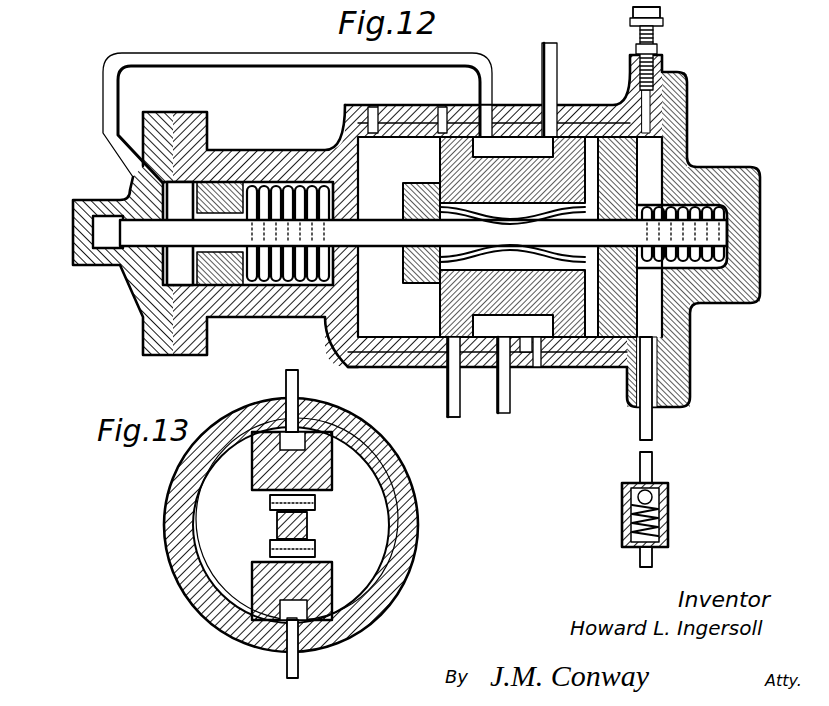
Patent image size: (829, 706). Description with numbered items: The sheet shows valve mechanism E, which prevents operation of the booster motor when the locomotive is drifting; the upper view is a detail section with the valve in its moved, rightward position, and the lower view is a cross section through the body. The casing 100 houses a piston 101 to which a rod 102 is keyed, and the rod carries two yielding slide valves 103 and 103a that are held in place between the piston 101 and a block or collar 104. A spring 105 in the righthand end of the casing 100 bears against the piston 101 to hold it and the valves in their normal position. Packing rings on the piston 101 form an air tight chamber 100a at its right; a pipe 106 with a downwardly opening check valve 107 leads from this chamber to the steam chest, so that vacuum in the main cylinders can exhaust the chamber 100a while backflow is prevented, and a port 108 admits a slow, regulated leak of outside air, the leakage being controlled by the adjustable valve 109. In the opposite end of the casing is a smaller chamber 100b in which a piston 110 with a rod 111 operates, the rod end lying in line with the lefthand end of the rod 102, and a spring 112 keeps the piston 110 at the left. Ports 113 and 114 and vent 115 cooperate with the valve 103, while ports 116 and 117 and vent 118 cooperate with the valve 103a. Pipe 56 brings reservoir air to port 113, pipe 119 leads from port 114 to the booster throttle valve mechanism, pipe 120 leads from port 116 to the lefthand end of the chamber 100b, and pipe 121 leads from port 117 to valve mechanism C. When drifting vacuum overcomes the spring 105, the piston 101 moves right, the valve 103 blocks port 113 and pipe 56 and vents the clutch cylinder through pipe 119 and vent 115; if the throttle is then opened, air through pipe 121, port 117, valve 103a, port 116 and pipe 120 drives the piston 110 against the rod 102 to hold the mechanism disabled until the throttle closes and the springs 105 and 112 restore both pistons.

In FIG. 12, the pipe 56 is at (451, 420).
In FIG. 13, the casing 100 is at (168, 500).
In FIG. 12, the air tight chamber 100a is at (652, 167).
In FIG. 12, the smaller chamber 100b is at (287, 195).
In FIG. 12, the piston 101 is at (632, 313).
In FIG. 12, the rod 102 is at (512, 237).
In FIG. 13, the rod 102 is at (310, 522).
In FIG. 12, the yielding slide valve 103 is at (513, 326).
In FIG. 13, the yielding slide valve 103 is at (283, 608).
In FIG. 12, the yielding slide valve 103a is at (513, 147).
In FIG. 13, the yielding slide valve 103a is at (297, 440).
In FIG. 12, the block or collar 104 is at (410, 190).
In FIG. 12, the spring 105 is at (720, 215).
In FIG. 12, the pipe 106 is at (653, 440).
In FIG. 12, the check valve 107 is at (668, 512).
In FIG. 12, the port 108 is at (652, 115).
In FIG. 12, the adjustable valve 109 is at (655, 40).
In FIG. 12, the piston 110 is at (217, 185).
In FIG. 12, the rod 111 is at (130, 240).
In FIG. 12, the spring 112 is at (285, 260).
In FIG. 12, the port 113 is at (423, 368).
In FIG. 12, the port 114 is at (525, 357).
In FIG. 13, the port 114 is at (300, 624).
In FIG. 12, the vent 115 is at (545, 360).
In FIG. 12, the port 116 is at (486, 120).
In FIG. 13, the port 116 is at (288, 418).
In FIG. 12, the port 117 is at (570, 108).
In FIG. 12, the vent 118 is at (441, 112).
In FIG. 12, the pipe 119 is at (505, 414).
In FIG. 13, the pipe 119 is at (292, 668).
In FIG. 12, the pipe 120 is at (276, 60).
In FIG. 13, the pipe 120 is at (290, 380).
In FIG. 12, the pipe 121 is at (556, 55).